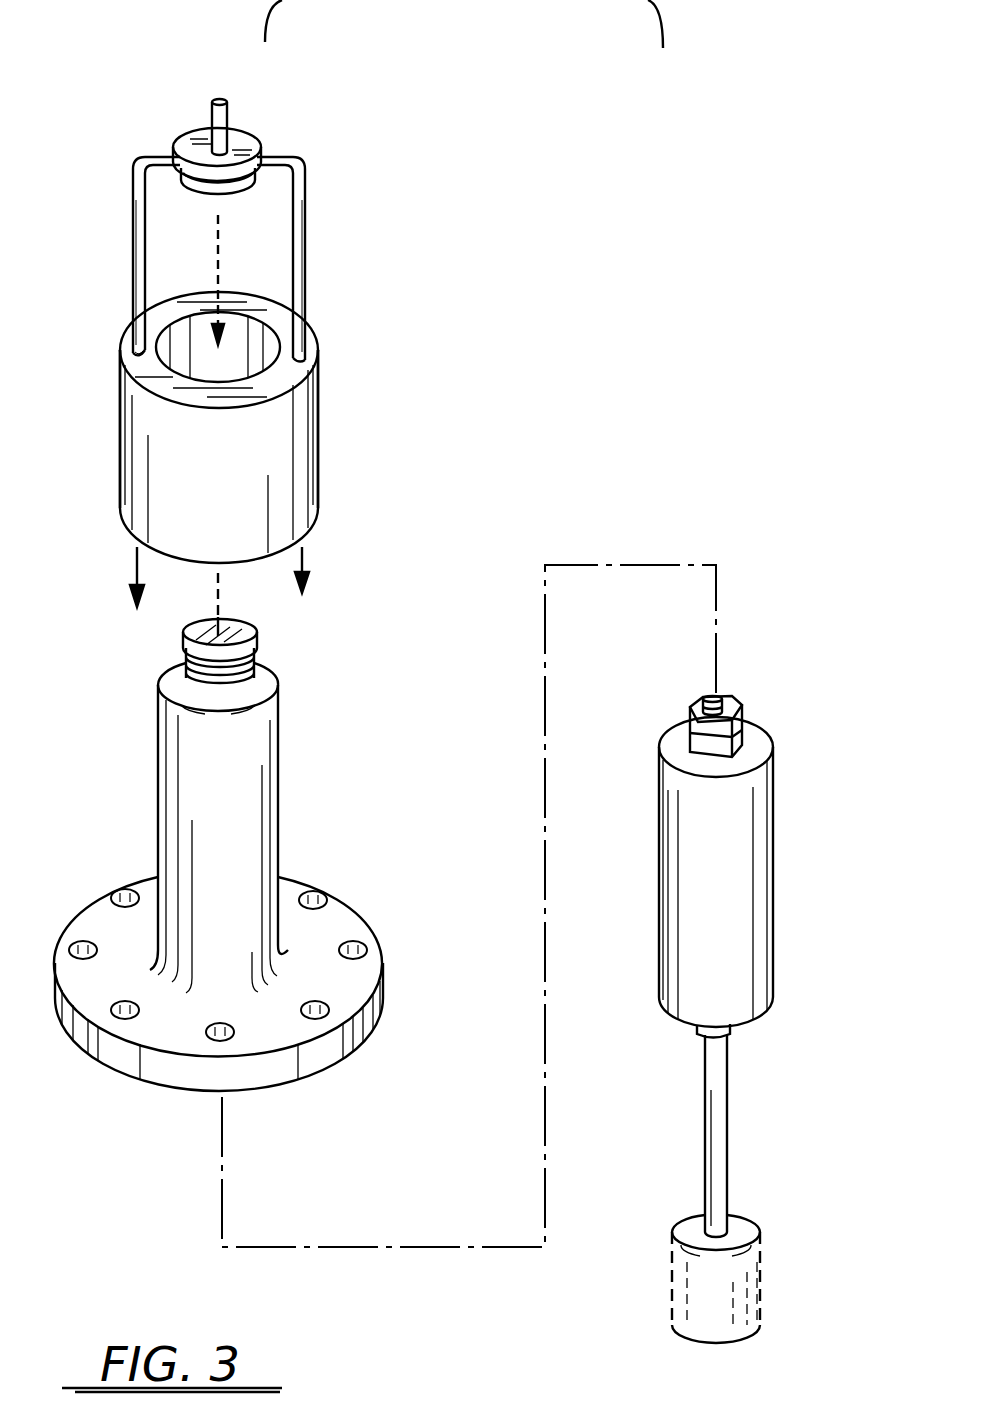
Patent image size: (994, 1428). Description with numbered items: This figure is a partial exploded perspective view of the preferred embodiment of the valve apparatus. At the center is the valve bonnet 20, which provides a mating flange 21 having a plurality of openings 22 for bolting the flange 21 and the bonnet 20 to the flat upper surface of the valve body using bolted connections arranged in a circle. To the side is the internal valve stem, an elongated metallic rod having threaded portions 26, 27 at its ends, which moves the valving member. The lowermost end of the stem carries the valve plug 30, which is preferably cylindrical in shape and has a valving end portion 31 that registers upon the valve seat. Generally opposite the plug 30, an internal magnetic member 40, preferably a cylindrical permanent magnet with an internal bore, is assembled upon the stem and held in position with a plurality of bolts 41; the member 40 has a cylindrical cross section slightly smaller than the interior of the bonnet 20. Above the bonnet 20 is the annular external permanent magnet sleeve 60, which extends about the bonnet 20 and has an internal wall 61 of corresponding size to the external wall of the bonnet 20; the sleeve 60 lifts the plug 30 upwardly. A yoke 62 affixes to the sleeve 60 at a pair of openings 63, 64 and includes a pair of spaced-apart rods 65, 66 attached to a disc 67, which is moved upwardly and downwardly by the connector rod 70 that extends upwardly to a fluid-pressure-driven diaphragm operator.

The valve bonnet 20 is at (281, 739).
The mating flange 21 is at (177, 1033).
The openings 22 is at (351, 930).
The threaded portion 26 is at (725, 694).
The threaded portion 27 is at (731, 1222).
The valve plug 30 is at (680, 1330).
The valving end portion 31 is at (742, 1346).
The internal magnetic member 40 is at (773, 870).
The bolts 41 is at (745, 719).
The external permanent magnet sleeve 60 is at (241, 460).
The internal wall 61 is at (212, 300).
The yoke 62 is at (138, 265).
The opening 63 is at (122, 355).
The opening 64 is at (305, 340).
The rod 65 is at (132, 203).
The rod 66 is at (305, 217).
The disc 67 is at (257, 142).
The connector rod 70 is at (207, 115).